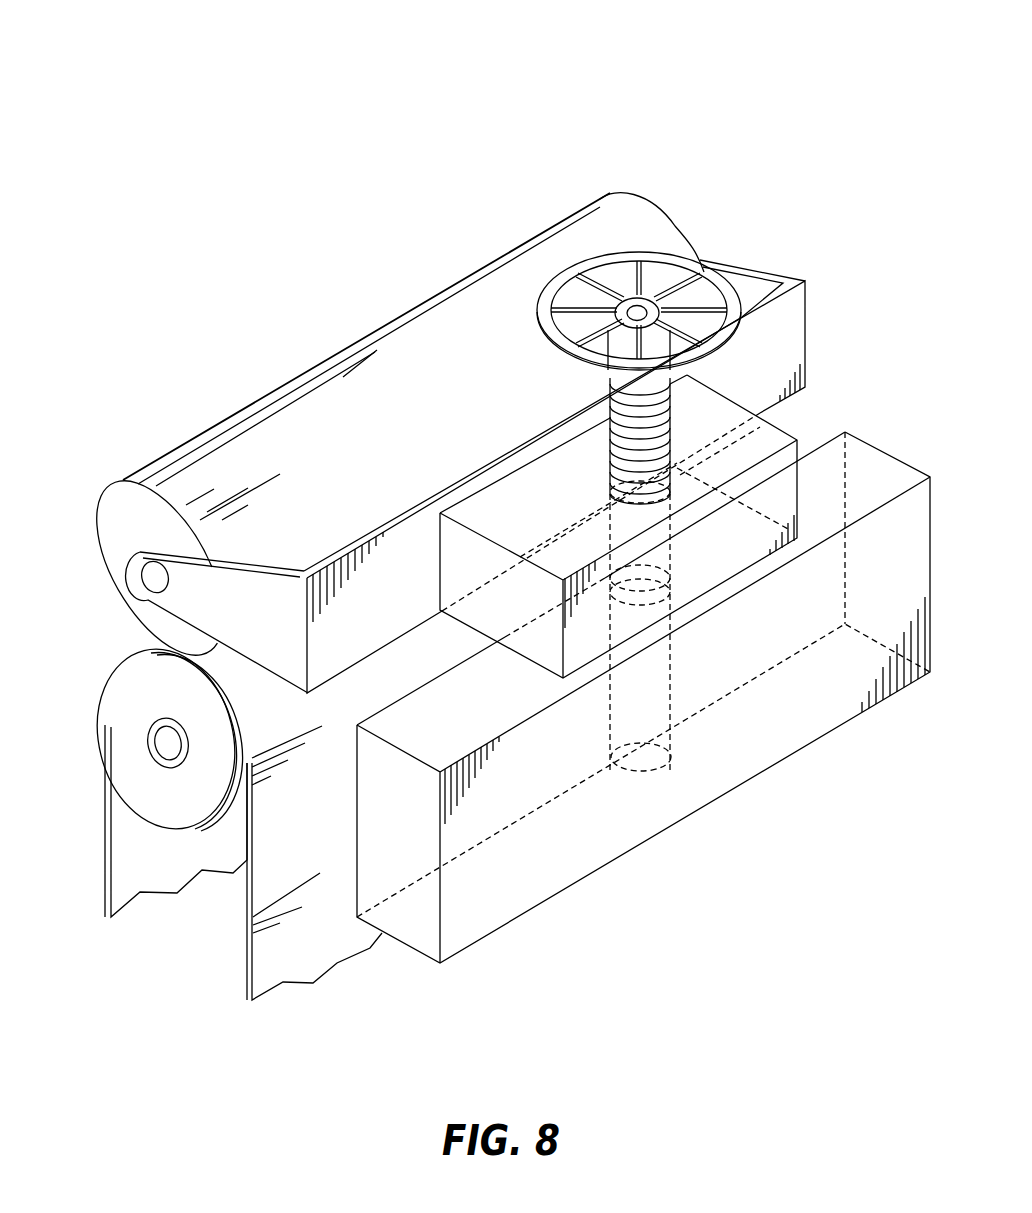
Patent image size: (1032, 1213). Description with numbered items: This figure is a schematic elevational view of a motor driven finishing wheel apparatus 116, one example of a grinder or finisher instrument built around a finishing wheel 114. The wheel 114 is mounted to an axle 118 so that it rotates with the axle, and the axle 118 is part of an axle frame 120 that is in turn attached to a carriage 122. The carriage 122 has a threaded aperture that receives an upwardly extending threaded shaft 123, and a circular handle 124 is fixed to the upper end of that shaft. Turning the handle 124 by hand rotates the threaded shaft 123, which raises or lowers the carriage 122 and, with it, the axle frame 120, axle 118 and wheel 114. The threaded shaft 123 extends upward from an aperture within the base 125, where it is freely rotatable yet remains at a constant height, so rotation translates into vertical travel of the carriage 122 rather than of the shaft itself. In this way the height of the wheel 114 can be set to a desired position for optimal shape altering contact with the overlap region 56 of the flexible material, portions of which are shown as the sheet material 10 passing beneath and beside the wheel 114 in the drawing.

The finishing wheel apparatus 116 is at (600, 86).
The finishing wheel 114 is at (402, 367).
The handle 124 is at (567, 275).
The threaded shaft 123 is at (623, 440).
The carriage 122 is at (789, 421).
The base 125 is at (798, 727).
The axle frame 120 is at (383, 602).
The axle 118 is at (140, 597).
The overlap region 56 is at (100, 718).
The sheet material 10 is at (142, 858).